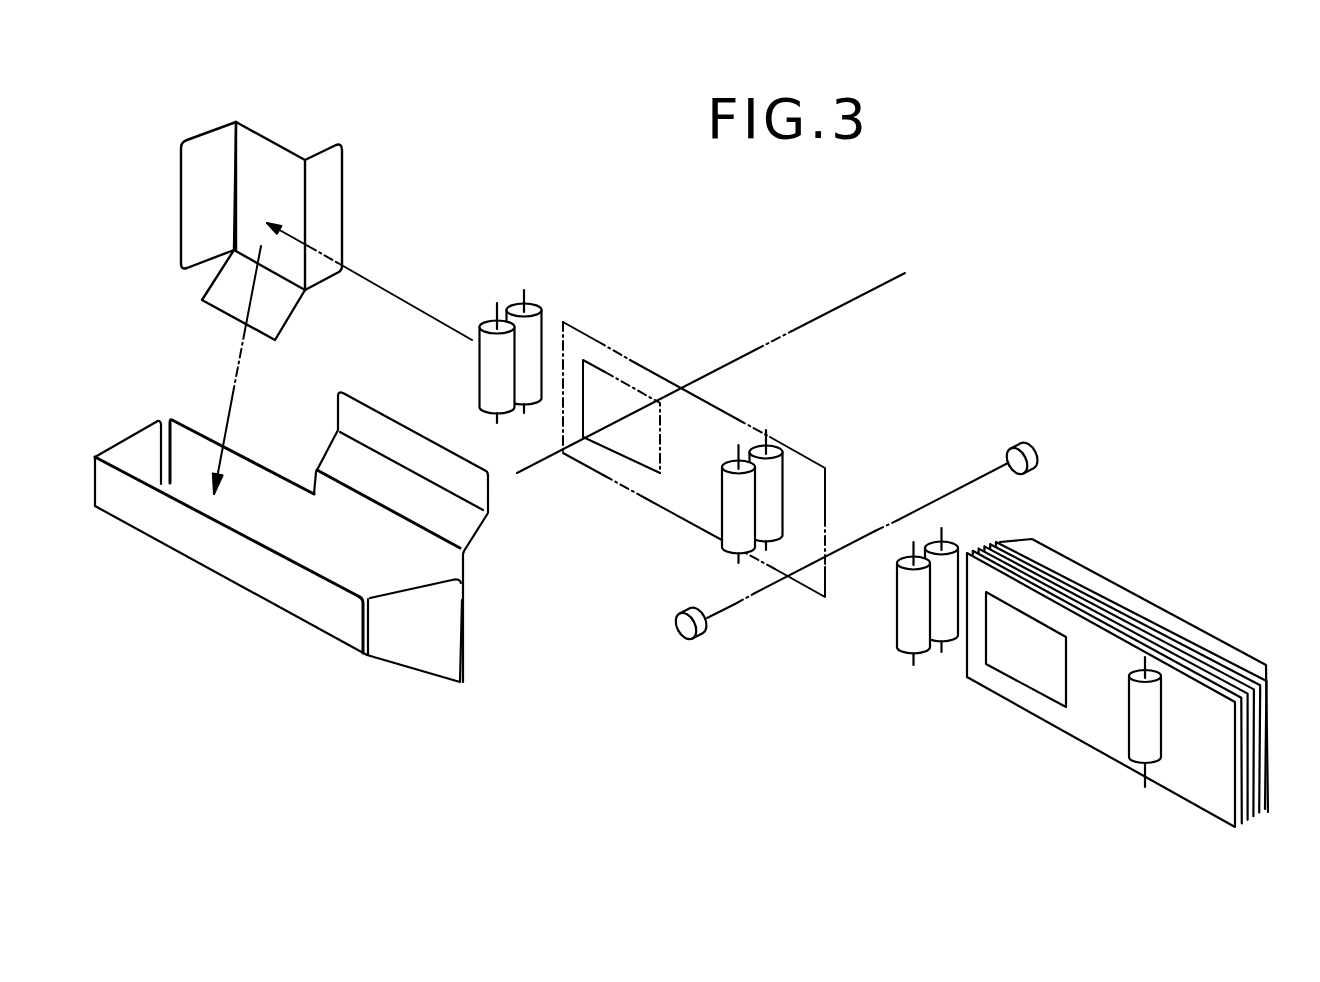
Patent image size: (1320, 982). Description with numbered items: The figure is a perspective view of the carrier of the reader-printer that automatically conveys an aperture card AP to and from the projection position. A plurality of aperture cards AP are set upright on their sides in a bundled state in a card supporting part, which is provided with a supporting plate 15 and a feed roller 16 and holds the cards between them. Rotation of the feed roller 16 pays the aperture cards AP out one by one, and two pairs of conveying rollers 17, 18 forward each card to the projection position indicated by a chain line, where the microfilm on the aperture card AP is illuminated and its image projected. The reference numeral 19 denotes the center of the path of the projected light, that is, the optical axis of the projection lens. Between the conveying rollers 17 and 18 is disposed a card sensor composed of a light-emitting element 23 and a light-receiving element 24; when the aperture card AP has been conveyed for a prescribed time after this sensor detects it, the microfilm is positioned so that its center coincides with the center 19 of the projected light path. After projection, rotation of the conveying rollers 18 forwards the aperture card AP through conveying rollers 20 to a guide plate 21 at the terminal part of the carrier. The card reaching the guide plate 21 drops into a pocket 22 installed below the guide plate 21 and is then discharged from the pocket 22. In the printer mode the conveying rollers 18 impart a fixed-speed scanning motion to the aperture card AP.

The supporting plate 15 is at (1153, 615).
The feed roller 16 is at (1129, 730).
The conveying rollers 17 is at (907, 616).
The conveying rollers 18 is at (773, 477).
The center of the path of the projected light 19 is at (810, 323).
The conveying rollers 20 is at (535, 340).
The guide plate 21 is at (326, 184).
The pocket 22 is at (236, 560).
The light-emitting element 23 is at (683, 641).
The light-receiving element 24 is at (1033, 443).
The aperture card AP is at (1198, 786).